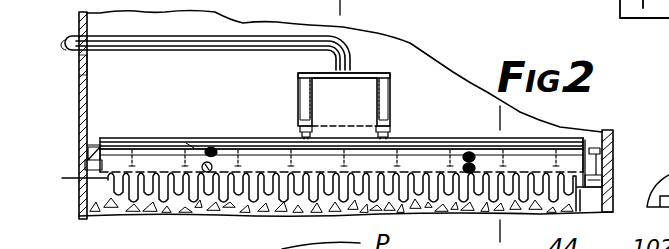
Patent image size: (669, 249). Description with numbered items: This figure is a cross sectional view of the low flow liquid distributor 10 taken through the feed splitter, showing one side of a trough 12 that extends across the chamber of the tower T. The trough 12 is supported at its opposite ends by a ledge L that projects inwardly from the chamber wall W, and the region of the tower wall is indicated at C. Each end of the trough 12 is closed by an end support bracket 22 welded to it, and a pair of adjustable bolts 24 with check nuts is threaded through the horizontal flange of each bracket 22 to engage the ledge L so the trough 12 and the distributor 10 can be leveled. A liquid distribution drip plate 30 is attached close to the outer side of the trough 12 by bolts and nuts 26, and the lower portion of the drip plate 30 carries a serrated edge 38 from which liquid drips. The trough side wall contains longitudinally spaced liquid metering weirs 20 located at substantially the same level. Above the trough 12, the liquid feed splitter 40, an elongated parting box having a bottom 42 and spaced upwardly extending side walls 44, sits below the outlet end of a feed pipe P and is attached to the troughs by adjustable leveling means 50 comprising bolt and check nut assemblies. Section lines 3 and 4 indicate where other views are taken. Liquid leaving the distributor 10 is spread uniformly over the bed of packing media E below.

The tower T is at (96, 32).
The feed pipe P is at (203, 43).
The section line 3 is at (315, 6).
The liquid feed splitter 40 is at (402, 70).
The side wall 44 is at (377, 90).
The bottom 42 is at (338, 120).
The adjustable leveling means 50 is at (389, 124).
The low flow liquid distributor 10 is at (257, 128).
The trough 12 is at (447, 134).
The liquid metering weir 20 is at (170, 154).
The liquid distribution drip plate 30 is at (221, 144).
The bolts and nuts 26 is at (190, 146).
The section line 4 is at (521, 118).
The end support bracket 22 is at (100, 143).
The adjustable bolt 24 is at (86, 153).
The curb wall C is at (100, 88).
The chamber wall W is at (88, 65).
The ledge L is at (76, 180).
The screen teeth 38 is at (120, 195).
The bed of packing media E is at (100, 217).